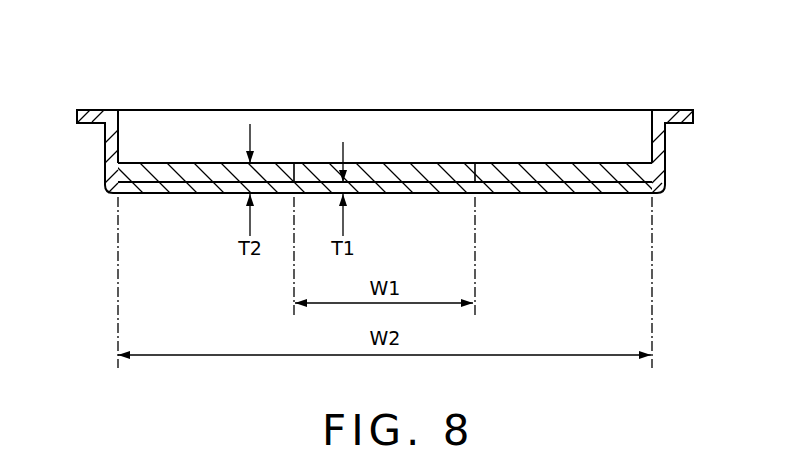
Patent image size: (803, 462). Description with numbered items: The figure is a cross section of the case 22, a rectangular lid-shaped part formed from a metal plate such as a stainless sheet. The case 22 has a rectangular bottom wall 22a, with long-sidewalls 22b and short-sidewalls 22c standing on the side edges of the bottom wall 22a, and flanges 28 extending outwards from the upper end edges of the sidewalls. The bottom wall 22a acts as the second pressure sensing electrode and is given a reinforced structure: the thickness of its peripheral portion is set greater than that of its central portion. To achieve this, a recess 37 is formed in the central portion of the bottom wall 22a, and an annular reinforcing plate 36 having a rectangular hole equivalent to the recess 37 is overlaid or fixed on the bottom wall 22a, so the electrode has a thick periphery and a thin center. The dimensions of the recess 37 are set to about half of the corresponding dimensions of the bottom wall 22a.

The case 22 is at (614, 82).
The bottom wall 22a is at (537, 185).
The long-sidewall 22b is at (107, 150).
The short-sidewall 22c is at (170, 127).
The flange 28 is at (93, 110).
The reinforcing plate 36 is at (536, 165).
The recess 37 is at (411, 178).